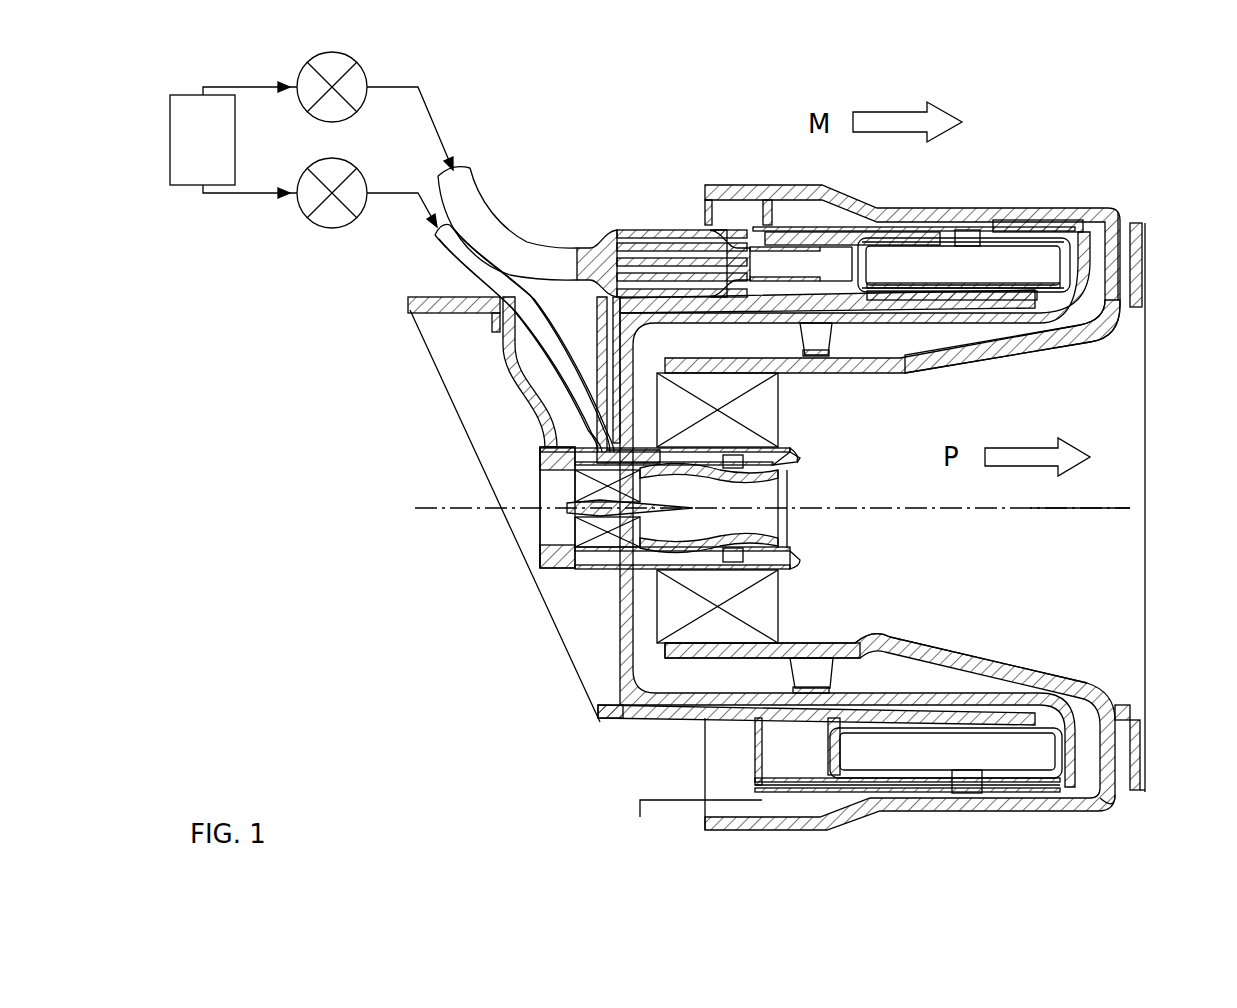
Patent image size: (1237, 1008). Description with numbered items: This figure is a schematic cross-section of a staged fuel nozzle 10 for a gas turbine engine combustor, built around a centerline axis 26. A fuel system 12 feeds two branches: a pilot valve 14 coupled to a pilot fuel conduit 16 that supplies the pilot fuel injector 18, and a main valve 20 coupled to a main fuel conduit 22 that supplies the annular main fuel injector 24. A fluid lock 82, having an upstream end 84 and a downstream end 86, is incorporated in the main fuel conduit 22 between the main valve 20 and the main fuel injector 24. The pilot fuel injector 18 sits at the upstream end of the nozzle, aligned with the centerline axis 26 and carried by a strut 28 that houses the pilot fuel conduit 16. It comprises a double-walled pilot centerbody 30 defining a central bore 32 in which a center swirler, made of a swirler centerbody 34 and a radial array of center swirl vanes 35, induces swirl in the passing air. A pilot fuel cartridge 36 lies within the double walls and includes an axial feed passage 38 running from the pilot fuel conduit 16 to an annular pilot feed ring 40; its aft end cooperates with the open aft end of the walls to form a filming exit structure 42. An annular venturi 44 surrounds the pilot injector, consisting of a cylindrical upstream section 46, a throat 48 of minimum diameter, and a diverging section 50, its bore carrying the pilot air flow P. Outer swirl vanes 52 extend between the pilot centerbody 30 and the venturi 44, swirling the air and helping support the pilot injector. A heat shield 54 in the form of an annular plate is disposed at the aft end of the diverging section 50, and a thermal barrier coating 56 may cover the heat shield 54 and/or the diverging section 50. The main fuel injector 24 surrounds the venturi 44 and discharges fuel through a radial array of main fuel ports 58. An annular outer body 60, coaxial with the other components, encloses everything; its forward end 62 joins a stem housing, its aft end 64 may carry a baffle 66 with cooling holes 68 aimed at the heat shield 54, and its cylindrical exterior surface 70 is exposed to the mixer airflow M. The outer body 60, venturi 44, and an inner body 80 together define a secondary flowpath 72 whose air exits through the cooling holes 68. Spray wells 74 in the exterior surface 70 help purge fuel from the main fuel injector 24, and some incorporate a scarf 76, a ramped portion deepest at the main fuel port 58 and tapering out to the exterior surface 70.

The fuel nozzle 10 is at (1078, 150).
The fuel system 12 is at (189, 157).
The pilot valve 14 is at (307, 220).
The pilot fuel conduit 16 is at (453, 245).
The pilot fuel injector 18 is at (548, 575).
The main valve 20 is at (357, 110).
The main fuel conduit 22 is at (543, 253).
The main fuel injector 24 is at (1035, 266).
The centerline axis 26 is at (1040, 512).
The strut 28 is at (522, 382).
The pilot centerbody 30 is at (548, 557).
The central bore 32 is at (768, 480).
The swirler centerbody 34 is at (570, 508).
The center swirl vanes 35 is at (578, 483).
The pilot fuel cartridge 36 is at (753, 562).
The axial feed passage 38 is at (648, 450).
The pilot feed ring 40 is at (735, 462).
The filming exit structure 42 is at (797, 468).
The venturi 44 is at (950, 638).
The upstream section 46 is at (790, 648).
The throat 48 is at (875, 635).
The diverging section 50 is at (997, 668).
The outer swirl vanes 52 is at (662, 622).
The heat shield 54 is at (1135, 760).
The thermal barrier coating 56 is at (1100, 330).
The main fuel ports 58 is at (940, 250).
The outer body 60 is at (845, 195).
The forward end 62 is at (698, 821).
The aft end 64 is at (1121, 818).
The baffle 66 is at (1113, 787).
The cooling holes 68 is at (1110, 717).
The exterior surface 70 is at (872, 825).
The secondary flowpath 72 is at (910, 686).
The spray wells 74 is at (966, 203).
The scarf 76 is at (1020, 210).
The inner body 80 is at (985, 313).
The fluid lock 82 is at (642, 218).
The upstream end 84 is at (582, 250).
The downstream end 86 is at (735, 255).